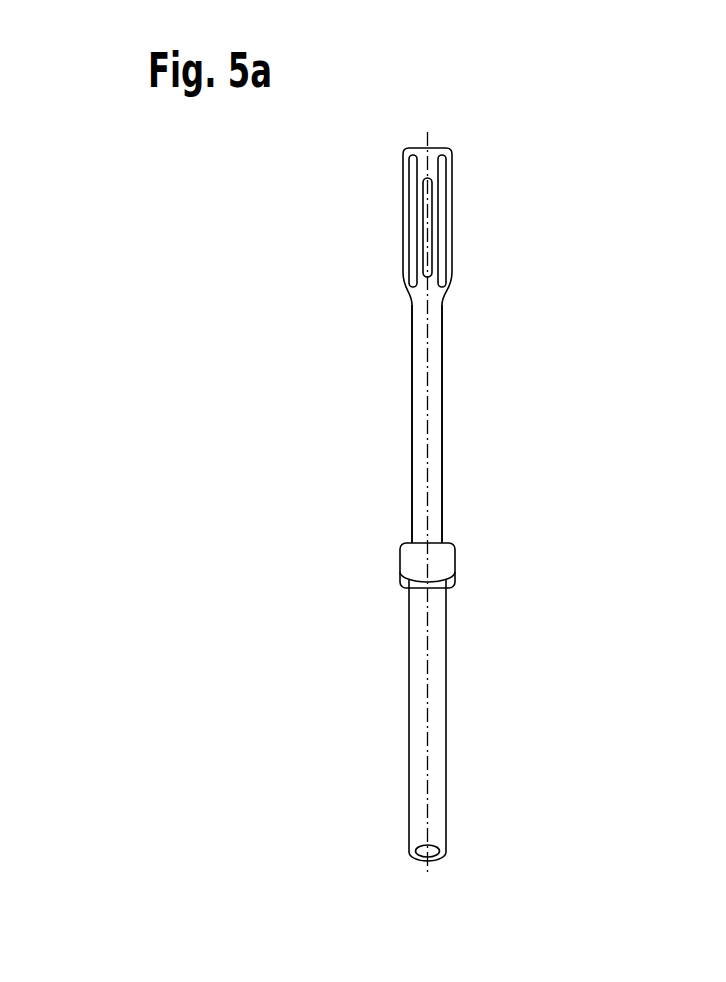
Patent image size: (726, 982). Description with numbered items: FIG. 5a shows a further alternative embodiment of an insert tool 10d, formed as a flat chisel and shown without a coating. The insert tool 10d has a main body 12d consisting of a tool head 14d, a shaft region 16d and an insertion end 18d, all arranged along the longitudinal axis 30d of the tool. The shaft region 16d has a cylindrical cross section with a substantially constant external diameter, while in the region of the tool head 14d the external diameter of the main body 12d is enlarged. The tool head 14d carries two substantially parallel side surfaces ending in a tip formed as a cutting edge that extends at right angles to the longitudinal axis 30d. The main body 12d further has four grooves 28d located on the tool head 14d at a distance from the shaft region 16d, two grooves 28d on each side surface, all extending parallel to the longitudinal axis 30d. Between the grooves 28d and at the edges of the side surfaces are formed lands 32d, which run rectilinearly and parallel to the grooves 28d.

The insert tool 10d is at (258, 208).
The main body 12d is at (437, 427).
The tool head 14d is at (356, 224).
The shaft region 16d is at (306, 414).
The insertion end 18d is at (306, 688).
The grooves 28d is at (413, 262).
The longitudinal axis 30d is at (428, 138).
The lands 32d is at (407, 240).